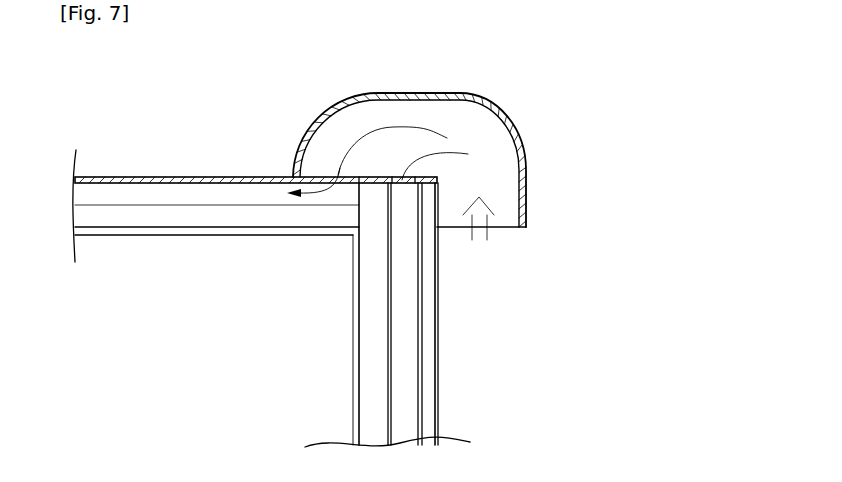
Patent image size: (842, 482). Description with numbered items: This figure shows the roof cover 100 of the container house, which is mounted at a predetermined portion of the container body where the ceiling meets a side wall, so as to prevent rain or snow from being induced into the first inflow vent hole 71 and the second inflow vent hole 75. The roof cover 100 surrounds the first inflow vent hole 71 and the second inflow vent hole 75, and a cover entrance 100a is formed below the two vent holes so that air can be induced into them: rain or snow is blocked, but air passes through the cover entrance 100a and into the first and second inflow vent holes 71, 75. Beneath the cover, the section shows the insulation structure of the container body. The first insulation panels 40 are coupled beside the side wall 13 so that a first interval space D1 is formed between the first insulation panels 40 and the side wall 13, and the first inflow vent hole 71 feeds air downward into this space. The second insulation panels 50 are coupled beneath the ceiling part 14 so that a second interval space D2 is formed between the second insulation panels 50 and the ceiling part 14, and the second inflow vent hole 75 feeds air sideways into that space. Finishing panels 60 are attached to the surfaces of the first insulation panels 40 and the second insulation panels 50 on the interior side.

The ceiling part 14 is at (110, 177).
The second insulation panels 50 is at (170, 215).
The second interval space D2 is at (234, 190).
The second inflow vent hole 75 is at (333, 180).
The first inflow vent hole 71 is at (401, 217).
The roof cover 100 is at (507, 123).
The cover entrance 100a is at (500, 228).
The finishing panels 60 is at (355, 290).
The first insulation panels 40 is at (370, 405).
The side wall 13 is at (425, 353).
The first interval space D1 is at (403, 316).